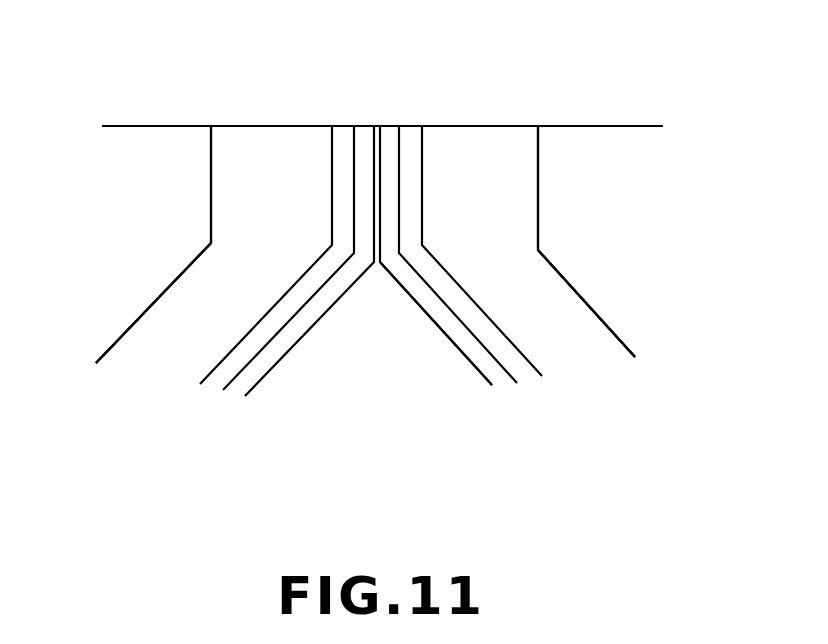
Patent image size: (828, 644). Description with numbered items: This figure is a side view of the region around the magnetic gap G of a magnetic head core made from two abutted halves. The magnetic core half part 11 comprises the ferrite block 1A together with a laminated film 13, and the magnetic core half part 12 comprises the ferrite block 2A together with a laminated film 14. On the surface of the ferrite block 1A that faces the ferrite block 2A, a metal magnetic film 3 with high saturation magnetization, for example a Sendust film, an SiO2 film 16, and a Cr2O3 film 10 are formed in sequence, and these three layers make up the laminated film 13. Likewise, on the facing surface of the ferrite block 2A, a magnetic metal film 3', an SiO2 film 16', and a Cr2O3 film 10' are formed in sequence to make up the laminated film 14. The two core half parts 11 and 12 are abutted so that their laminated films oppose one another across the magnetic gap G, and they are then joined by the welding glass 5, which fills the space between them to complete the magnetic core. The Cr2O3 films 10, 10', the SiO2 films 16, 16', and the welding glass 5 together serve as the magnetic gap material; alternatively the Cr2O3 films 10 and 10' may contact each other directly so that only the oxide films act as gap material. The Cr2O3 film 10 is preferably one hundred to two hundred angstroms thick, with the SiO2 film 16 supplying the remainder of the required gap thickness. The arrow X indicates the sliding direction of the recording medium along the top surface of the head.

The magnetic core half part 11 is at (112, 115).
The magnetic core half part 12 is at (648, 116).
The ferrite block 1A is at (158, 183).
The ferrite block 2A is at (593, 183).
The metal magnetic film 3 is at (257, 103).
The magnetic metal film 3' is at (496, 101).
The arrow X is at (326, 101).
The magnetic gap G is at (422, 121).
The Cr2O3 film 10 is at (288, 258).
The Cr2O3 film 10' is at (444, 254).
The SiO2 film 16 is at (266, 272).
The SiO2 film 16' is at (532, 251).
The welding glass 5 is at (453, 355).
The laminated film 13 is at (242, 414).
The laminated film 14 is at (648, 376).